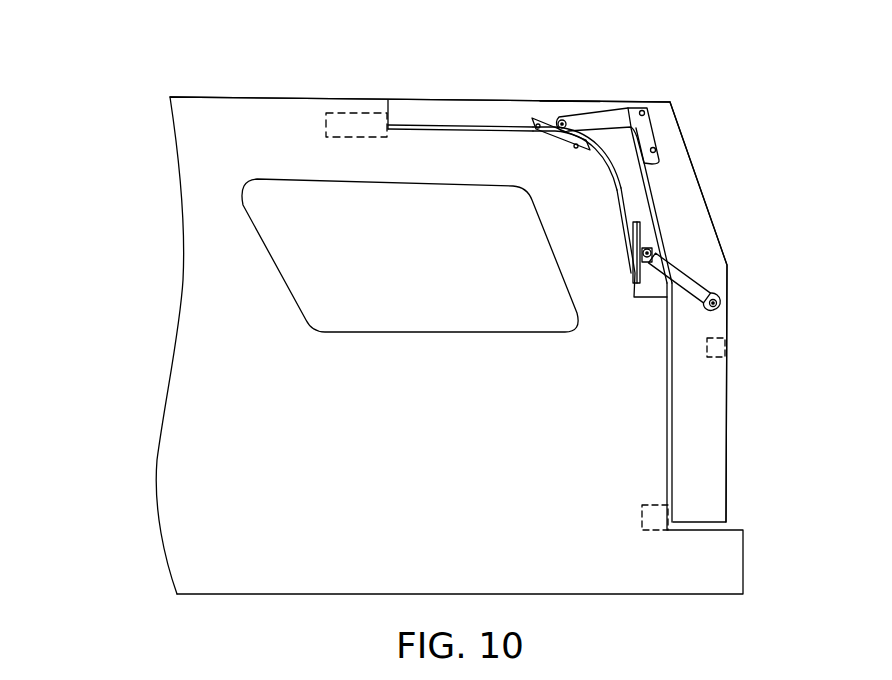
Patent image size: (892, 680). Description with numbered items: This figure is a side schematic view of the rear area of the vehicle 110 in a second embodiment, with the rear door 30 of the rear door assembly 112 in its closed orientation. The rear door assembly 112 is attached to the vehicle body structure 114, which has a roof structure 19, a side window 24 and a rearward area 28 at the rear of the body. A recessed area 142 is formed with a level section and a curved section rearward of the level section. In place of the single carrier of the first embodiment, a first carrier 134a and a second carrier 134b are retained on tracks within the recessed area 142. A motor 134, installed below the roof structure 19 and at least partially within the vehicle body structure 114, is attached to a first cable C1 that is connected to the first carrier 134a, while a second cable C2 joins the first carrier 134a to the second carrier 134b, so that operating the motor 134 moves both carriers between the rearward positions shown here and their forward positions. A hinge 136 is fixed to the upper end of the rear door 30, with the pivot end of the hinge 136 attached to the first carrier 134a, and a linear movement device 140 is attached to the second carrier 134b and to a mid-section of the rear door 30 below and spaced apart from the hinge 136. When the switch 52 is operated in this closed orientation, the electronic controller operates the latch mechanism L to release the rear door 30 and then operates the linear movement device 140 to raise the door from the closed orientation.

The vehicle 110 is at (172, 45).
The vehicle body structure 114 is at (215, 122).
The roof structure 19 is at (283, 99).
The rearward area 28 is at (563, 101).
The rear door 30 is at (670, 197).
The recessed area 142 is at (428, 115).
The motor 134 is at (367, 138).
The first carrier 134a is at (543, 118).
The second carrier 134b is at (641, 232).
The link 136 is at (601, 120).
The linear movement device 140 is at (687, 280).
The rear door assembly 112 is at (694, 156).
The switch 52 is at (713, 347).
The side window 24 is at (375, 273).
The latch mechanism L is at (642, 512).
The first cable C1 is at (468, 130).
The second cable C2 is at (613, 190).